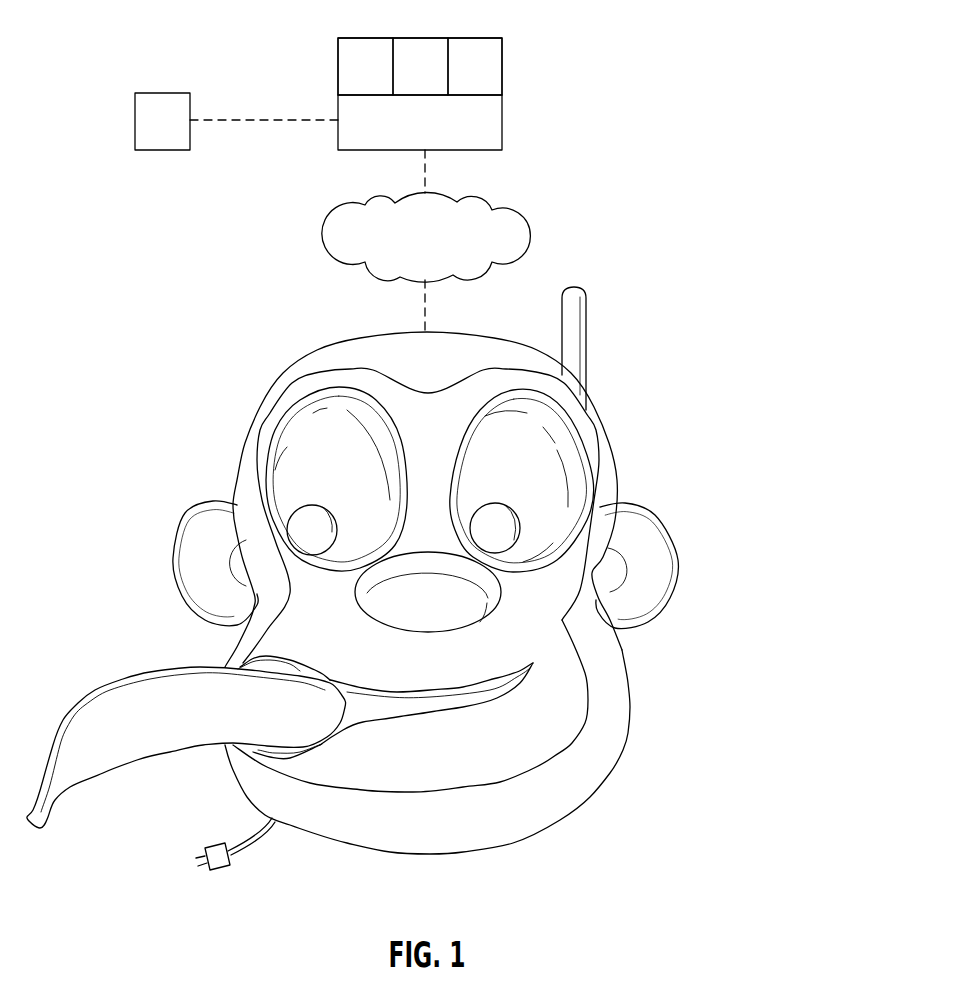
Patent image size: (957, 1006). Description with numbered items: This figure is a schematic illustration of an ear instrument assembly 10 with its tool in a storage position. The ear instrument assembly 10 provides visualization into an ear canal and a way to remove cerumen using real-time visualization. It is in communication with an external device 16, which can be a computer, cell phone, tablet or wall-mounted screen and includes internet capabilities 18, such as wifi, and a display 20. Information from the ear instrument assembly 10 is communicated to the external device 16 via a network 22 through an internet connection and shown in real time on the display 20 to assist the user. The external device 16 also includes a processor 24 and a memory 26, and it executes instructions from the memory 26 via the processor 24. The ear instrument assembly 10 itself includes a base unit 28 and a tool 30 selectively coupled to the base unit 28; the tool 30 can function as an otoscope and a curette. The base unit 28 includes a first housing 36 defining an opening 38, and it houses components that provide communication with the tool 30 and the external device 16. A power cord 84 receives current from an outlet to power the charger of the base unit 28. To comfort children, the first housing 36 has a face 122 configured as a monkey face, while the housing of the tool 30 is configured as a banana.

The ear instrument assembly 10 is at (720, 188).
The external device 16 is at (503, 117).
The internet capabilities 18 is at (376, 79).
The display 20 is at (176, 136).
The network 22 is at (439, 254).
The processor 24 is at (434, 79).
The memory 26 is at (490, 79).
The base unit 28 is at (558, 823).
The tool 30 is at (88, 693).
The first housing 36 is at (618, 658).
The opening 38 is at (265, 752).
The power cord 84 is at (217, 871).
The face 122 is at (568, 712).